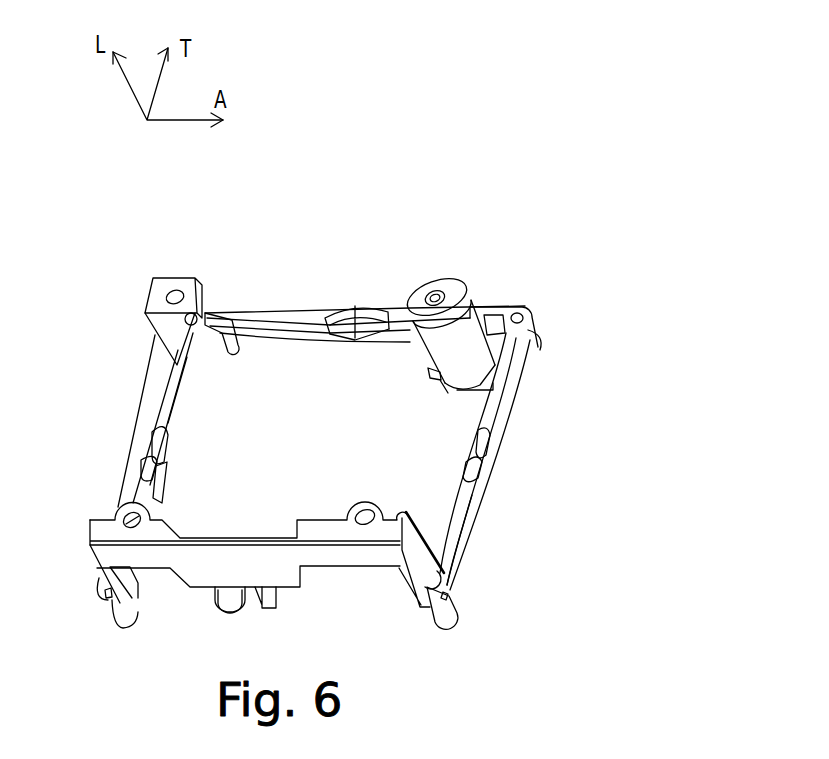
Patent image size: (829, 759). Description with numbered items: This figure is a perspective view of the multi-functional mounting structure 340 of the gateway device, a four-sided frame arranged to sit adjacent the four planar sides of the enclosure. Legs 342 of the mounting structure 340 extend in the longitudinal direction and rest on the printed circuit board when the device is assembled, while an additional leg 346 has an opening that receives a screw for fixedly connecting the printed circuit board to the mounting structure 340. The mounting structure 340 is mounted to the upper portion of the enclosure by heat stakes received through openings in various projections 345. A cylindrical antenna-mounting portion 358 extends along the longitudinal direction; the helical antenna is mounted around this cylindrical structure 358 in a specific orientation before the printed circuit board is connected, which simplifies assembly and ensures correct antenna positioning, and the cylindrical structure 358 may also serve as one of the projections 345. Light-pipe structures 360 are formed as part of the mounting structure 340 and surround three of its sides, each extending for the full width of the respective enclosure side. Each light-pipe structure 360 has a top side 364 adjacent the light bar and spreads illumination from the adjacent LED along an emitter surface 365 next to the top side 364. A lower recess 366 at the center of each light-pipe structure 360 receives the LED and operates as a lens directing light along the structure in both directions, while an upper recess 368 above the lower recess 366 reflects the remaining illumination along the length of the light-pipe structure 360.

The multi-functional mounting structure 340 is at (523, 265).
The legs 342 is at (540, 335).
The projections 345 is at (150, 312).
The additional leg 346 is at (235, 600).
The cylindrical antenna-mounting portion 358 is at (480, 348).
The light-pipe structures 360 is at (157, 390).
The top side 364 is at (307, 313).
The emitter surface 365 is at (483, 478).
The lower recess 366 is at (357, 333).
The upper recess 368 is at (352, 313).